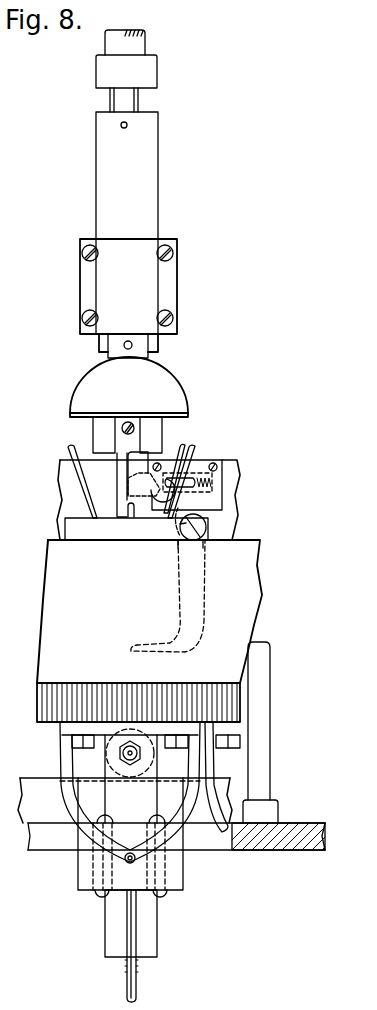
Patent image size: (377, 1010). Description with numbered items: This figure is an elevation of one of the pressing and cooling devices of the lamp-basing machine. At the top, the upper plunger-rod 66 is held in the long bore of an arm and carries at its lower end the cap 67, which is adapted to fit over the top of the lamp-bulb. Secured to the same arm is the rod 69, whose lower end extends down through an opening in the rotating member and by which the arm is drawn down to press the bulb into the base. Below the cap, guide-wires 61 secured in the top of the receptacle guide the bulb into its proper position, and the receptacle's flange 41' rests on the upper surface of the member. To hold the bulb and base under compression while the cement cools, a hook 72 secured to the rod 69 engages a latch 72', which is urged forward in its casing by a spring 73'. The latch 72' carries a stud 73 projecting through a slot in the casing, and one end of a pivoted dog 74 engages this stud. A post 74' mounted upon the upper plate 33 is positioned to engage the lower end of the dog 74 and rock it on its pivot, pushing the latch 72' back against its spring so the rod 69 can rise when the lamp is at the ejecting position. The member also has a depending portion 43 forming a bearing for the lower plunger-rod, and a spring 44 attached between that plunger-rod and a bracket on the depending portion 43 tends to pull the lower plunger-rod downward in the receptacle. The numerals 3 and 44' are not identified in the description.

The rod 69 is at (139, 105).
The upper plunger-rod 66 is at (138, 348).
The cap 67 is at (170, 392).
The guide-wires 61 is at (66, 449).
The stud 73 is at (169, 471).
The hook 72 is at (120, 475).
The latch 72' is at (123, 480).
The spring 73' is at (170, 500).
The flange 41' is at (136, 529).
The pivoted dog 74 is at (168, 596).
The knurled ring 3 is at (100, 700).
The post 74' is at (275, 732).
The depending portion 43 is at (62, 752).
The upper plate 33 is at (268, 850).
The spring 44 is at (109, 946).
The needle shank 44' is at (163, 944).